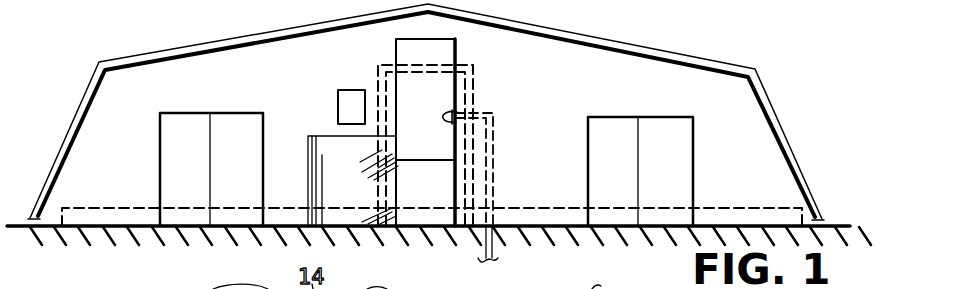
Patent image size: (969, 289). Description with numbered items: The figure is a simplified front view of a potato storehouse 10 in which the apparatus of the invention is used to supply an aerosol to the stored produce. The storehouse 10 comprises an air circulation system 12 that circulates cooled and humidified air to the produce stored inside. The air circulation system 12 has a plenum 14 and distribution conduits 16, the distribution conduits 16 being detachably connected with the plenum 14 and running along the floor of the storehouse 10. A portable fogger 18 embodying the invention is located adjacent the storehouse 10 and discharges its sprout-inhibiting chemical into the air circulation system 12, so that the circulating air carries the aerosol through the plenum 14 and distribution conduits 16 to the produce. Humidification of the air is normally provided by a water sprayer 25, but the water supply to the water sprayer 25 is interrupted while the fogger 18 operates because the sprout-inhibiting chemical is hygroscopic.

The potato storehouse 10 is at (752, 60).
The air circulation system 12 is at (474, 97).
The plenum 14 is at (377, 80).
The distribution conduits 16 is at (133, 205).
The portable fogger 18 is at (314, 130).
The water sprayer 25 is at (496, 172).